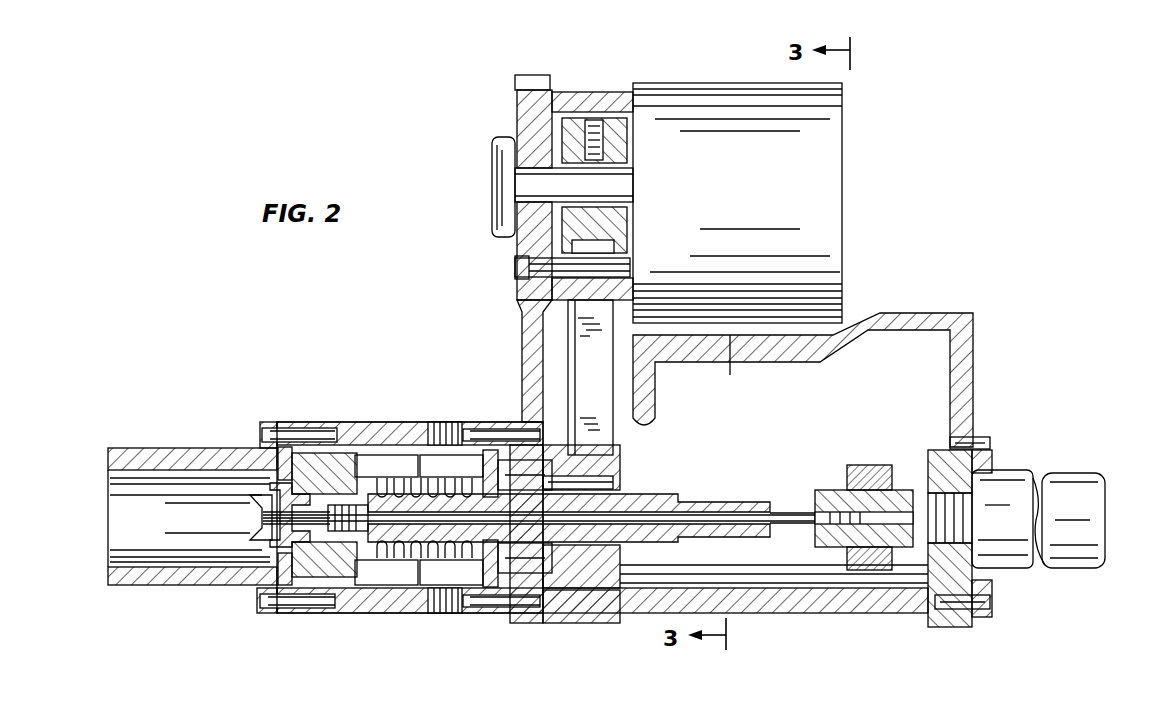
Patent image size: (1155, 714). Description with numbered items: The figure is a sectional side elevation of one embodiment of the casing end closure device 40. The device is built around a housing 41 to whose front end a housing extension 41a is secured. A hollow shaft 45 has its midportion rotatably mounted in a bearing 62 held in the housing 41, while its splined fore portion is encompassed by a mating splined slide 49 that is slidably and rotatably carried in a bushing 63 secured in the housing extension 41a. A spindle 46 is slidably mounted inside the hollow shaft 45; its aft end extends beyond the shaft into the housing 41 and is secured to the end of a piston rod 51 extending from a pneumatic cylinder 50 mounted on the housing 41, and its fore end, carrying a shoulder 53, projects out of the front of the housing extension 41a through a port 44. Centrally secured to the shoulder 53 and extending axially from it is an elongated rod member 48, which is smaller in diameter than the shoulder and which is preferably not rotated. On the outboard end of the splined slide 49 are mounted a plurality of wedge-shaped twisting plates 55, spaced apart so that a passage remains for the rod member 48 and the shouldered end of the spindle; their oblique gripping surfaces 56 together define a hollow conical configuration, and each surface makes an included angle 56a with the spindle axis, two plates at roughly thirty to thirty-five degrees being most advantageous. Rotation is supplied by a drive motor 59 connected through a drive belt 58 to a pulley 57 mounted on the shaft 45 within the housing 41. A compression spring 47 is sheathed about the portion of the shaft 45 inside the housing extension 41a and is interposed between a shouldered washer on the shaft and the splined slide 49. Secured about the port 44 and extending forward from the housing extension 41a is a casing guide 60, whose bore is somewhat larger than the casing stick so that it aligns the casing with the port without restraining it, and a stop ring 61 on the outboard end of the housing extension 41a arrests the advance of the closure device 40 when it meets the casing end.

The casing end closure device 40 is at (485, 390).
The housing 41 is at (963, 385).
The housing extension 41a is at (383, 428).
The port 44 is at (328, 456).
The hollow shaft 45 is at (675, 493).
The spindle 46 is at (792, 512).
The compression spring 47 is at (462, 542).
The rod member 48 is at (258, 518).
The splined slide 49 is at (378, 557).
The pneumatic cylinder 50 is at (1016, 478).
The piston rod 51 is at (925, 508).
The shoulder 53 is at (343, 555).
The twisting plates 55 is at (263, 530).
The oblique gripping surface 56 is at (258, 498).
The included angle 56a is at (263, 517).
The pulley 57 is at (617, 610).
The drive belt 58 is at (608, 425).
The drive motor 59 is at (755, 181).
The casing guide 60 is at (195, 443).
The stop ring 61 is at (268, 425).
The bearing 62 is at (525, 465).
The bushing 63 is at (410, 452).